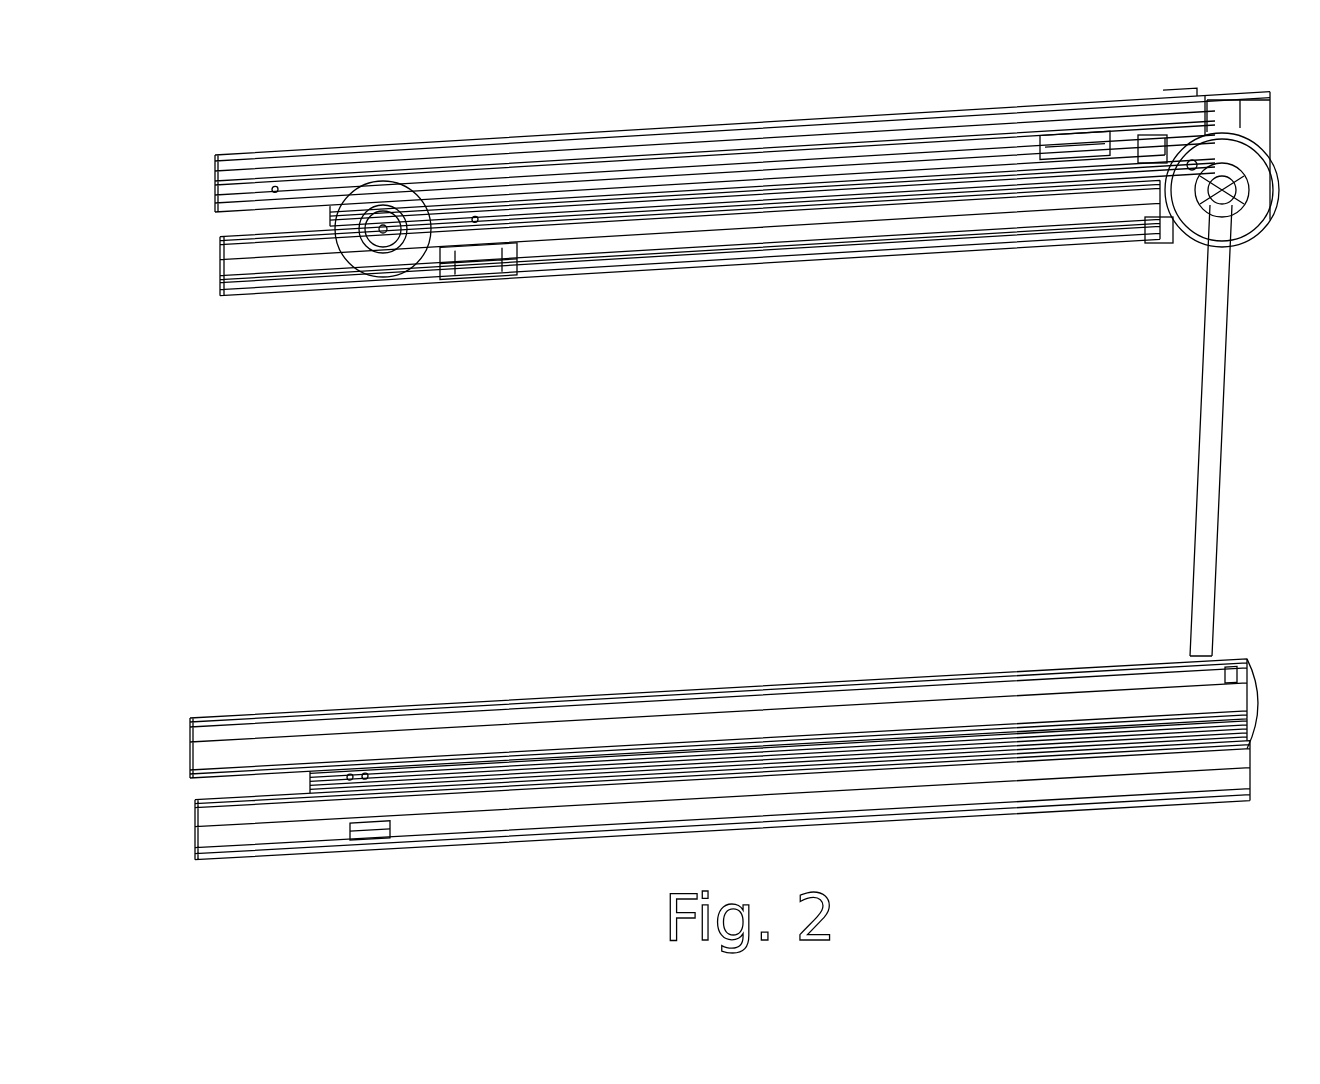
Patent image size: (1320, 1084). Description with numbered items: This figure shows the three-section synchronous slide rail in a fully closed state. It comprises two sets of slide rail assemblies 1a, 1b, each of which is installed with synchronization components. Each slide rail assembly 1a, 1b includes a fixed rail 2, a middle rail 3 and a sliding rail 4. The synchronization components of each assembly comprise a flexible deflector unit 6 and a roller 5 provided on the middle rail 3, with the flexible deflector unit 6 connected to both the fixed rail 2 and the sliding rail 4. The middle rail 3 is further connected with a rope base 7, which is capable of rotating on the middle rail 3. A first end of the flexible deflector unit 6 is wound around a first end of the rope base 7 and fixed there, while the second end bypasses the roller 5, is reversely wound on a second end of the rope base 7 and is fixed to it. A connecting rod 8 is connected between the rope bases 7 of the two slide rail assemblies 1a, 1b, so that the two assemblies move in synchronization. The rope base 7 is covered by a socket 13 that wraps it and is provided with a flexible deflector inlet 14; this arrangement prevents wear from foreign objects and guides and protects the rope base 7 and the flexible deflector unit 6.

The slide rail assembly 1a is at (412, 128).
The slide rail assembly 1b is at (546, 856).
The fixed rail 2 is at (415, 832).
The middle rail 3 is at (502, 770).
The sliding rail 4 is at (603, 742).
The roller 5 is at (373, 252).
The flexible deflector unit 6 is at (497, 180).
The rope base 7 is at (1182, 205).
The connecting rod 8 is at (1197, 452).
The socket 13 is at (1238, 137).
The flexible deflector inlet 14 is at (1160, 150).